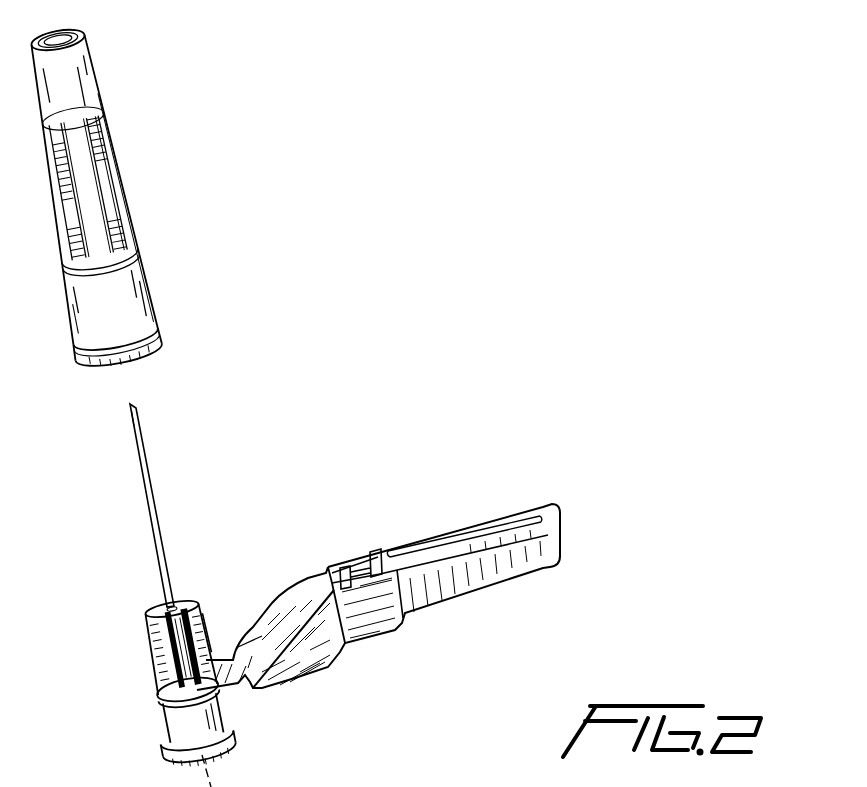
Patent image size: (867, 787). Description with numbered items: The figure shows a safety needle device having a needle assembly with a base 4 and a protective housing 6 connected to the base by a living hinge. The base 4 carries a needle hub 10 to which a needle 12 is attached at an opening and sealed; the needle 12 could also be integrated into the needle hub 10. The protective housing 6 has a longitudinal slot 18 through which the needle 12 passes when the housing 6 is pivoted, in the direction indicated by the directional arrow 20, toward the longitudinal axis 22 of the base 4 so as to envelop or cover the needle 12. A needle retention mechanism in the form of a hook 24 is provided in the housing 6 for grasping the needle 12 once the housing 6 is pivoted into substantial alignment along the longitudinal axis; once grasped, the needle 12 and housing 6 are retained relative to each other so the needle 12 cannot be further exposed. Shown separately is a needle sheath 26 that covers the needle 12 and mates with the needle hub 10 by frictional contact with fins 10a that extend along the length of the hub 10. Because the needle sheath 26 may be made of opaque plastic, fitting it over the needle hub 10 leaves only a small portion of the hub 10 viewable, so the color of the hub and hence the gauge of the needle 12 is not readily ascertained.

The base 4 is at (157, 715).
The protective housing 6 is at (482, 588).
The needle hub 10 is at (148, 650).
The fins 10a is at (205, 625).
The needle 12 is at (152, 495).
The longitudinal slot 18 is at (515, 522).
The directional arrow 20 is at (333, 412).
The longitudinal axis 22 is at (204, 771).
The hook 24 is at (363, 560).
The needle sheath 26 is at (122, 190).